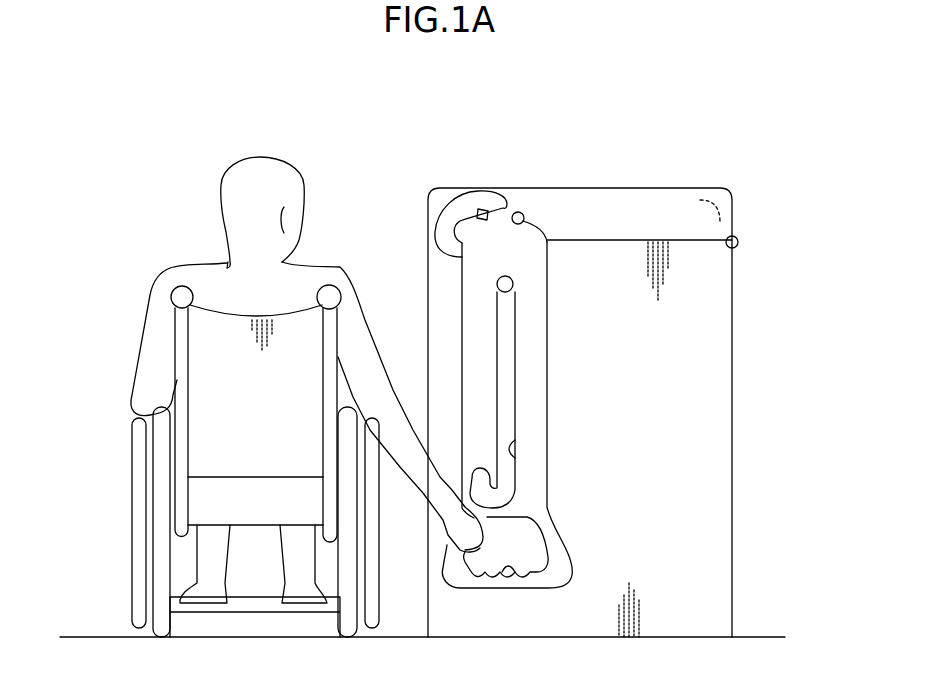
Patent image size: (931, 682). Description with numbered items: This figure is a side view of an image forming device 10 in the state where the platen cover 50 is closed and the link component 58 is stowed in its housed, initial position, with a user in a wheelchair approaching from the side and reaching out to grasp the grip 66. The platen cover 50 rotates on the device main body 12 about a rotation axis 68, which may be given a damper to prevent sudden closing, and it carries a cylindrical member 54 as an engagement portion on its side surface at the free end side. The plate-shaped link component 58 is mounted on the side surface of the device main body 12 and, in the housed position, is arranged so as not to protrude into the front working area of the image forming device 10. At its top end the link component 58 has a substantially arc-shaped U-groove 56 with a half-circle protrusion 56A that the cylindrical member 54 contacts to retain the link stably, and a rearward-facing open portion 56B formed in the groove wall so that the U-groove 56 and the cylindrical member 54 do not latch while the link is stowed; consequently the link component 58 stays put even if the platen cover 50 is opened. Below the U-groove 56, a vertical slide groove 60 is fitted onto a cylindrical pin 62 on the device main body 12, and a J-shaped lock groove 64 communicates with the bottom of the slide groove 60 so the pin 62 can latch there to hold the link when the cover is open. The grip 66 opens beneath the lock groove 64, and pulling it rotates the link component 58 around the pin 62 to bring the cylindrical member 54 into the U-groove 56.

The image forming device 10 is at (708, 148).
The device main body 12 is at (732, 430).
The platen cover 50 is at (633, 218).
The cylindrical member 54 is at (525, 220).
The U-groove 56 is at (497, 228).
The half-circle protrusion 56A is at (481, 192).
The open portion 56B is at (507, 210).
The link component 58 is at (549, 374).
The slide groove 60 is at (517, 452).
The cylindrical pin 62 is at (513, 284).
The lock groove 64 is at (462, 446).
The grip 66 is at (510, 572).
The rotation axis 68 is at (739, 241).